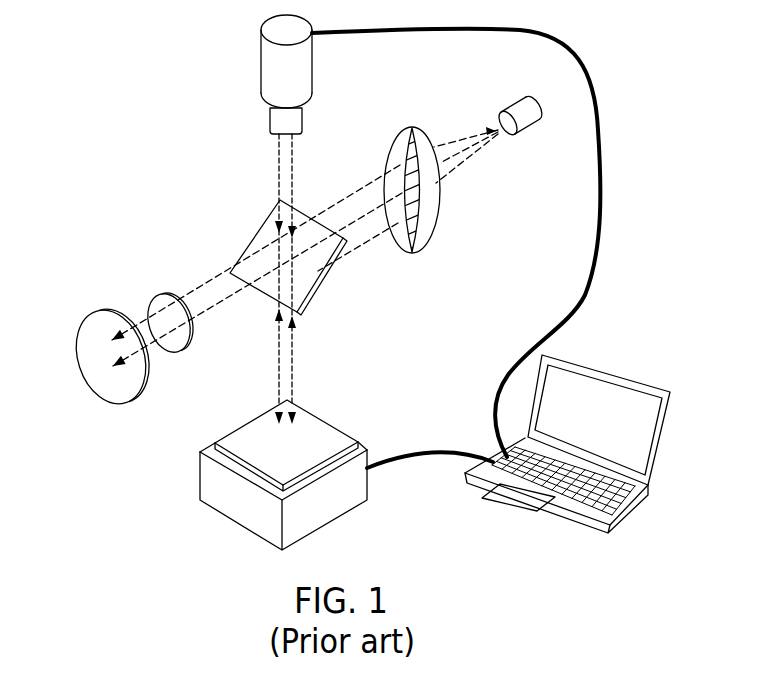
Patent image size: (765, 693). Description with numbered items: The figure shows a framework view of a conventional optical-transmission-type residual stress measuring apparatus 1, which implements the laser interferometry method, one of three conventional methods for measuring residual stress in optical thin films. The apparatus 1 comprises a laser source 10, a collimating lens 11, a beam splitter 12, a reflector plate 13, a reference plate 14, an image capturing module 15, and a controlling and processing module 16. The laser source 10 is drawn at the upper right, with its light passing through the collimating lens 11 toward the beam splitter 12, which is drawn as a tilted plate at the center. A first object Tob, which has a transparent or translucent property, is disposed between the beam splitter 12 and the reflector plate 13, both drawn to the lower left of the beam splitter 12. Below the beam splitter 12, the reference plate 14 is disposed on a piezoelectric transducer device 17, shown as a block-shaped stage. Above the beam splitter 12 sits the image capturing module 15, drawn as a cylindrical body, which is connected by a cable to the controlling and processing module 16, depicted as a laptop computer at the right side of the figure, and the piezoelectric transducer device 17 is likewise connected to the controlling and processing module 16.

The optical-transmission-type residual stress measuring apparatus 1 is at (124, 139).
The laser source 10 is at (533, 121).
The collimating lens 11 is at (423, 242).
The beam splitter 12 is at (325, 277).
The reflector plate 13 is at (133, 393).
The reference plate 14 is at (236, 442).
The image capturing module 15 is at (308, 98).
The controlling and processing module 16 is at (627, 378).
The piezoelectric transducer (PZT) device 17 is at (338, 505).
The first object Tob is at (185, 347).